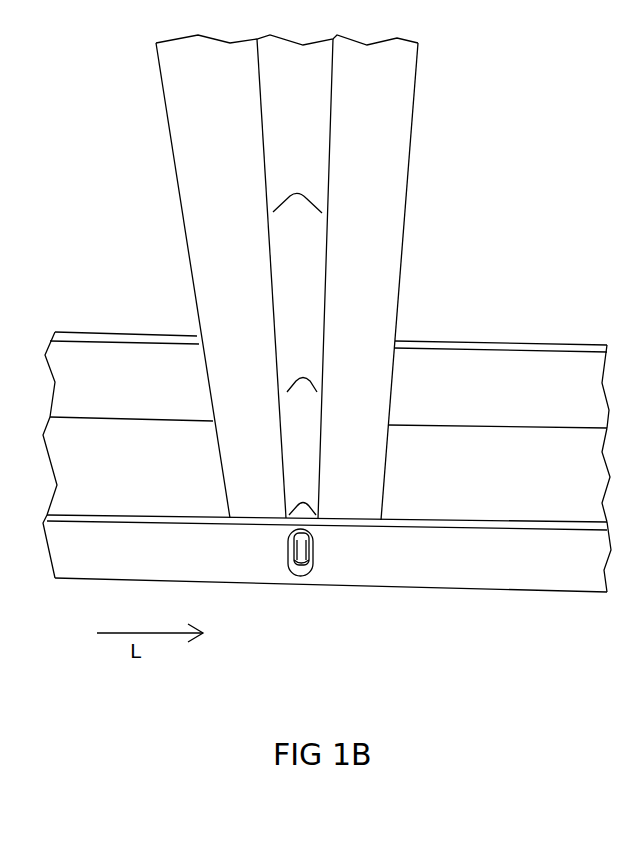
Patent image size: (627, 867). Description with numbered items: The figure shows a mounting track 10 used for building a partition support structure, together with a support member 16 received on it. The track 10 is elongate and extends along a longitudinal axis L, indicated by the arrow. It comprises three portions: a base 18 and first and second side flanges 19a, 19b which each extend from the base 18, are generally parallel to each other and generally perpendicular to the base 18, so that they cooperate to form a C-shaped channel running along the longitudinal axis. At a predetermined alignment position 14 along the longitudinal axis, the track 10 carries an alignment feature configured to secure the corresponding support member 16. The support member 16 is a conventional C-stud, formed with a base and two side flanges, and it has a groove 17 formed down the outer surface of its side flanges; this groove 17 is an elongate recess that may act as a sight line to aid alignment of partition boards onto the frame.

The track 10 is at (558, 318).
The alignment position 14 is at (304, 612).
The support member 16 is at (432, 143).
The groove 17 is at (278, 274).
The base 18 is at (527, 477).
The first side flange 19a is at (483, 565).
The second side flange 19b is at (463, 370).